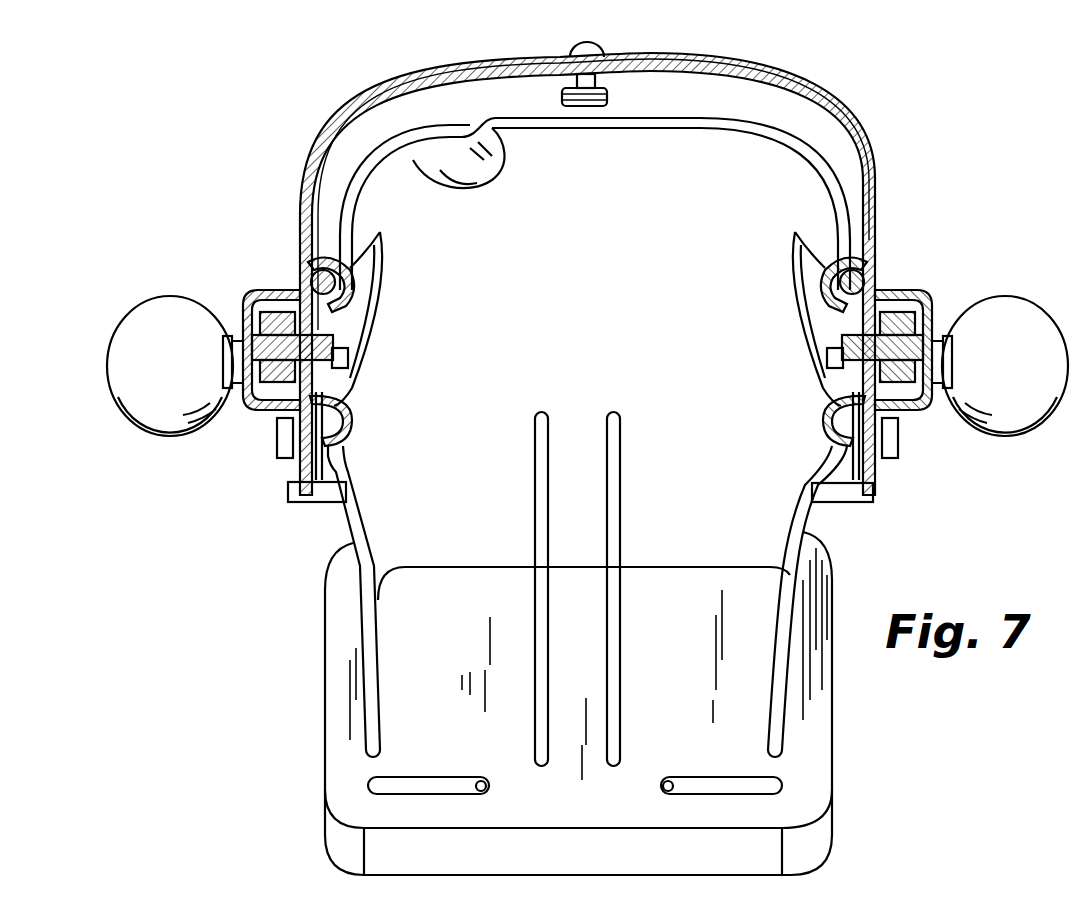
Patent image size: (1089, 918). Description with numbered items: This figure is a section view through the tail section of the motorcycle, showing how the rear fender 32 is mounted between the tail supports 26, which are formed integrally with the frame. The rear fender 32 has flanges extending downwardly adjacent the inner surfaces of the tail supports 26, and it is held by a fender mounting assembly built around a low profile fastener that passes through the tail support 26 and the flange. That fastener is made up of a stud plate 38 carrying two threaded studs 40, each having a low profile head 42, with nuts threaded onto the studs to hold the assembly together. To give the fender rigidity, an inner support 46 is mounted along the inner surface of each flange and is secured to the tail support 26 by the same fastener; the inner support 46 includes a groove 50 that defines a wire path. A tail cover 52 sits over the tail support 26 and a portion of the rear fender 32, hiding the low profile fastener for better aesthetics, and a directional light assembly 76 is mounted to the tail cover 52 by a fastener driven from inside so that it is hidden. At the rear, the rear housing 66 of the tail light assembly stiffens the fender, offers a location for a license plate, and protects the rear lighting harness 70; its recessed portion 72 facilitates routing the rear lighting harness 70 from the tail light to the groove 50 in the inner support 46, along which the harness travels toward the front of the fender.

The rear fender 32 is at (822, 94).
The rear housing 66 is at (843, 200).
The rear lighting harness 70 is at (353, 180).
The recessed portion 72 is at (492, 182).
The directional light assembly 76 is at (122, 447).
The tail cover 52 is at (263, 288).
The threaded stud 40 is at (327, 343).
The low profile head 42 is at (257, 342).
The stud plate 38 is at (255, 405).
The inner support 46 is at (357, 290).
The groove 50 is at (340, 267).
The tail support 26 is at (287, 380).